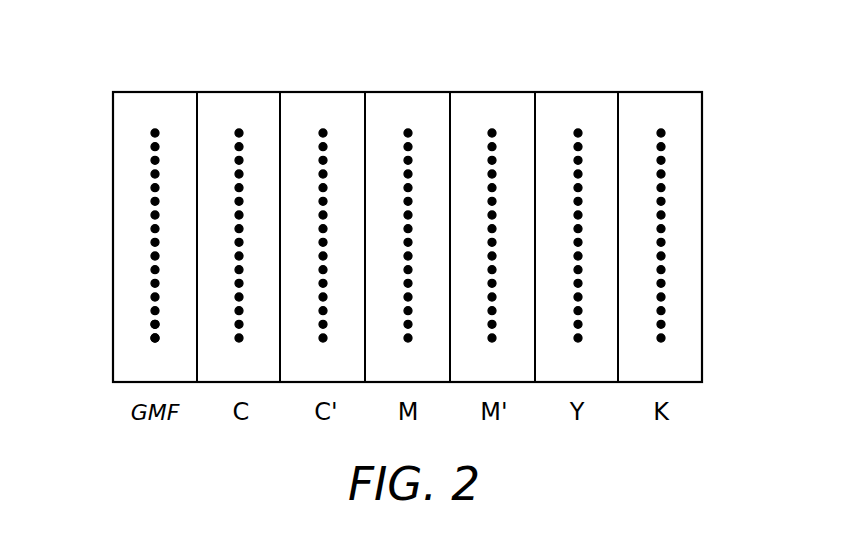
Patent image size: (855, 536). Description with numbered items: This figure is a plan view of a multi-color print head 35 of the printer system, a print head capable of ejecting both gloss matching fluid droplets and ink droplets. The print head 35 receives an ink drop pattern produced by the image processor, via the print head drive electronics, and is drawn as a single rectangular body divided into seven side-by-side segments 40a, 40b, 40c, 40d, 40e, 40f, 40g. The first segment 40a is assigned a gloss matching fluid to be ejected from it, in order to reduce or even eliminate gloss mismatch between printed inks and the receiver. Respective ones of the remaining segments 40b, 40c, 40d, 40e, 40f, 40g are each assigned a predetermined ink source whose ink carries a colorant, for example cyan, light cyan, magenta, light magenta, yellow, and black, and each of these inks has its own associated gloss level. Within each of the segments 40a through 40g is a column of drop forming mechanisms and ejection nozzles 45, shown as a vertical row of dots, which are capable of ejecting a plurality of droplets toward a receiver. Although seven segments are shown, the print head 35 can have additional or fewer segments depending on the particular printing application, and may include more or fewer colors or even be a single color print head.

The print head 35 is at (727, 247).
The segment 40a is at (155, 96).
The segment 40b is at (232, 98).
The segment 40c is at (325, 98).
The segment 40d is at (409, 97).
The segment 40e is at (488, 98).
The segment 40f is at (565, 98).
The segment 40g is at (652, 97).
The ejection nozzles 45 is at (152, 324).